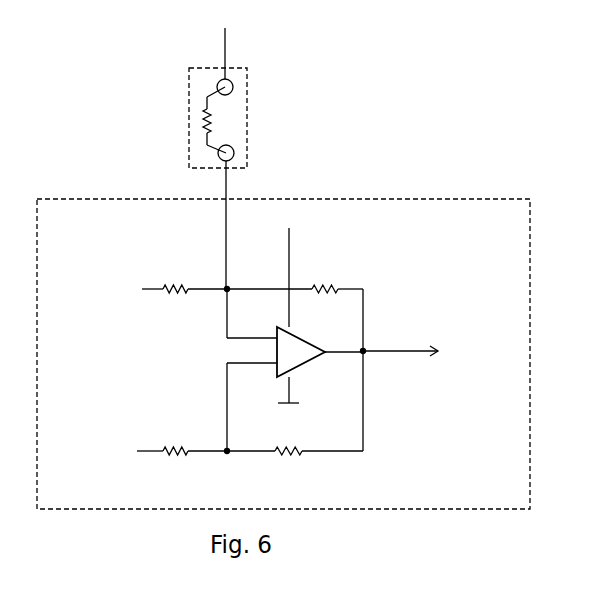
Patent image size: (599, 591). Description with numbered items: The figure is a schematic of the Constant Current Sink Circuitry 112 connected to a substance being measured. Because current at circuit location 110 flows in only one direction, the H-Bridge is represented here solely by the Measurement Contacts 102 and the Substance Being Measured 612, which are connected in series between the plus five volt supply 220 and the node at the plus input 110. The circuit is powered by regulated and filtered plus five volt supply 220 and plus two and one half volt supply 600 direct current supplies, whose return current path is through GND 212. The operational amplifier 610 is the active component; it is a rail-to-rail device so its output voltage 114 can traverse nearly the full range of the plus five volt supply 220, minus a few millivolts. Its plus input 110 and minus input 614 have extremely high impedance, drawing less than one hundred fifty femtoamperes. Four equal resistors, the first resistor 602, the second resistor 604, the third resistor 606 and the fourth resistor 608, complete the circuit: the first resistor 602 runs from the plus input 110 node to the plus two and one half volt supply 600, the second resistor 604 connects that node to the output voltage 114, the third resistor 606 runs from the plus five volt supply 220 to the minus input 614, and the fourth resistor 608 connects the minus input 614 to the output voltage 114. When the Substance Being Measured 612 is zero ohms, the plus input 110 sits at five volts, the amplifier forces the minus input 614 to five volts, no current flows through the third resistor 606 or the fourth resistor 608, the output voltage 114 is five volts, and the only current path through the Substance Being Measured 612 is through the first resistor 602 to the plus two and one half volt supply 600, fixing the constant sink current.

The measurement contacts 102 is at (243, 110).
The substance being measured 612 is at (196, 121).
The +5 Volts power supply 220 is at (226, 58).
The constant current sink circuitry 112 is at (418, 220).
The '+' input of the operational amplifier 110 is at (222, 280).
The +2.5 Volts power supply 600 is at (98, 277).
The resistor R1 602 is at (175, 297).
The resistor R2 604 is at (320, 293).
The operational amplifier 610 is at (312, 350).
The GND 212 is at (292, 392).
The '−' input of the operational amplifier 614 is at (223, 395).
The resistor R3 606 is at (173, 458).
The resistor R4 608 is at (285, 457).
The output voltage 114 is at (373, 342).